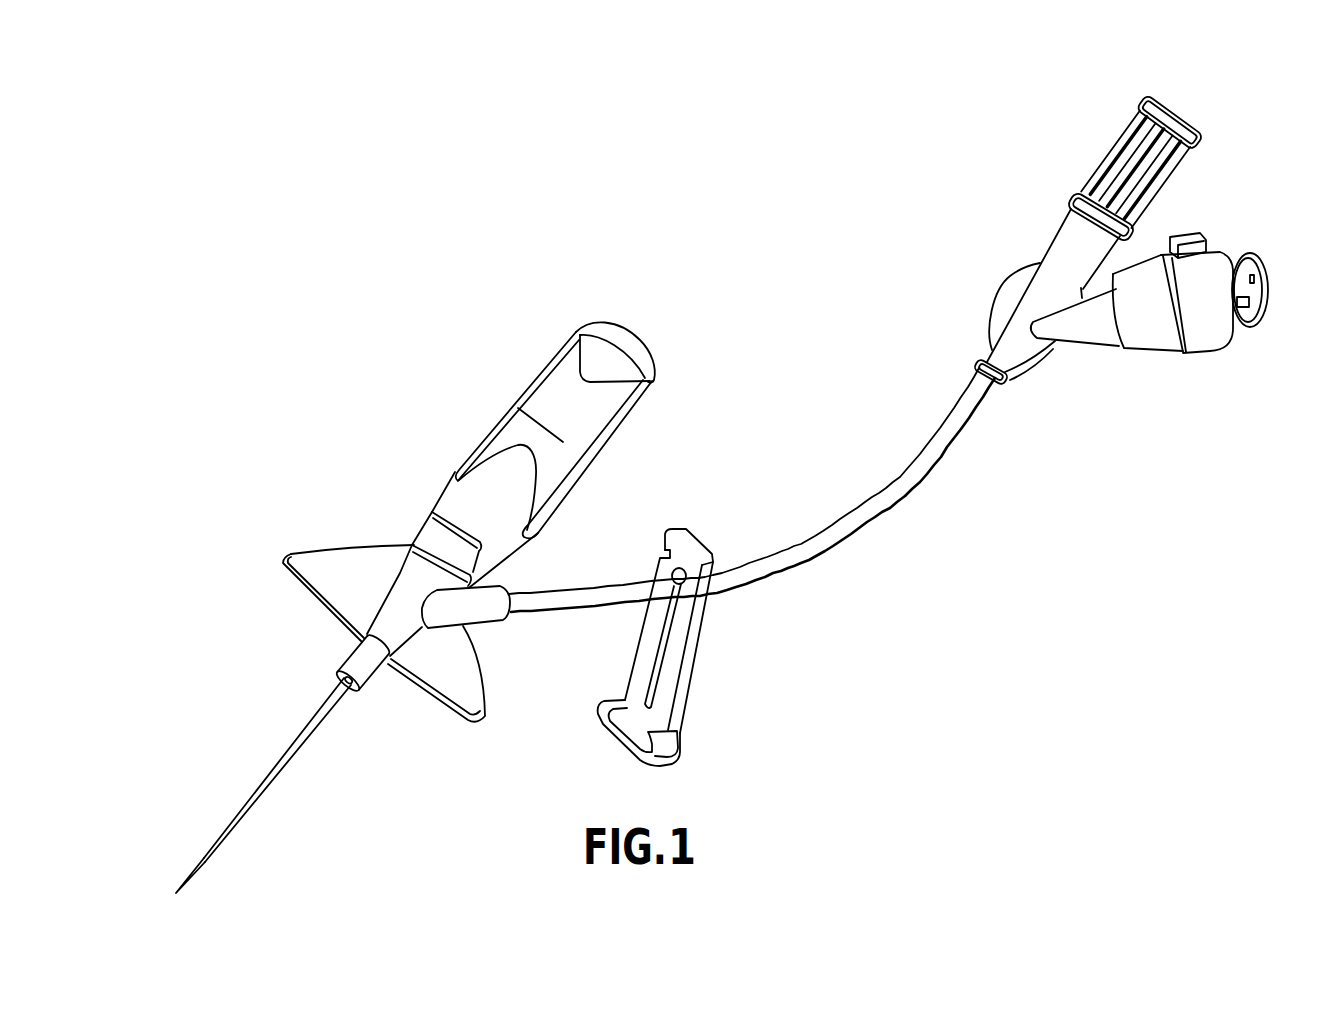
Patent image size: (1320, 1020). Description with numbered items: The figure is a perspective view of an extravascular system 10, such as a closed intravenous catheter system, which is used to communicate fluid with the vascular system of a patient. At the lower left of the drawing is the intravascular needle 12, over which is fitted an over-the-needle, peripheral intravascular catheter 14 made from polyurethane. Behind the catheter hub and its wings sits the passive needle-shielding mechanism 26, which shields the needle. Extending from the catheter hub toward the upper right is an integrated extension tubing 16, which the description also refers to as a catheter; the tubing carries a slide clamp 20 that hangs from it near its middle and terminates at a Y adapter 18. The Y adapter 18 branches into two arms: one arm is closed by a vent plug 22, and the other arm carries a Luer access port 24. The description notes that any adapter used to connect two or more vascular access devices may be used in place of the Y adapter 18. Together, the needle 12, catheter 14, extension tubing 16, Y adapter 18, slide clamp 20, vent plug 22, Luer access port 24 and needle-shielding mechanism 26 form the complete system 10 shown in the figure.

The extravascular system 10 is at (414, 379).
The intravascular needle 12 is at (182, 875).
The peripheral intravascular catheter 14 is at (293, 768).
The integrated extension tubing 16 is at (905, 500).
The Y adapter 18 is at (1091, 339).
The slide clamp 20 is at (682, 693).
The vent plug 22 is at (1160, 93).
The Luer access port 24 is at (1256, 319).
The passive needle-shielding mechanism 26 is at (547, 392).